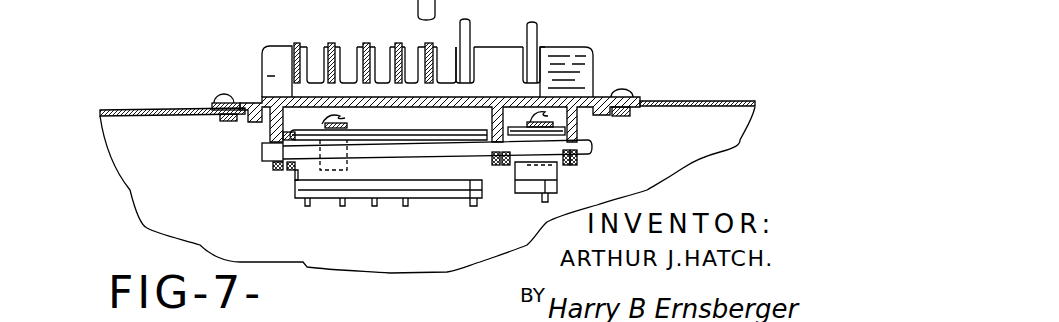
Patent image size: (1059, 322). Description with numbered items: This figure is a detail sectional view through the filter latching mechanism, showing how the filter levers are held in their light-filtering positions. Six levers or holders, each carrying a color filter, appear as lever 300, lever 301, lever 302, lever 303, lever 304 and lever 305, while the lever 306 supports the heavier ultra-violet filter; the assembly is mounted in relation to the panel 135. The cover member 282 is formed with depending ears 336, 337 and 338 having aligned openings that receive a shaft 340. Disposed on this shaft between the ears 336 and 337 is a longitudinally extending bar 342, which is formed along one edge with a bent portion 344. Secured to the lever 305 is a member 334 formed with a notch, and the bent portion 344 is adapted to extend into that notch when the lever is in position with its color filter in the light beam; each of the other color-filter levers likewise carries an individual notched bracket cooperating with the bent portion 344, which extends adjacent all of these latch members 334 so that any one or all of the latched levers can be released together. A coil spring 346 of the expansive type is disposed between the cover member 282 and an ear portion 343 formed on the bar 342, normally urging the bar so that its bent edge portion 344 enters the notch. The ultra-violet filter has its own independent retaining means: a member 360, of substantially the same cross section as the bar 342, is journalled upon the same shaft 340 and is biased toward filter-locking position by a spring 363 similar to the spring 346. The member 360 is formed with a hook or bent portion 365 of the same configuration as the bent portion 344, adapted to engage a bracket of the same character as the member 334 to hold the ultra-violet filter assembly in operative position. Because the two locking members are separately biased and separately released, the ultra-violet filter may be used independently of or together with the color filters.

The panel 135 is at (718, 100).
The cover member 282 is at (630, 93).
The lever 300 is at (290, 48).
The lever 301 is at (328, 45).
The lever 302 is at (365, 43).
The lever 303 is at (400, 32).
The lever 304 is at (430, 43).
The lever 305 is at (467, 22).
The lever 306 is at (537, 33).
The member 334 is at (470, 202).
The depending ear 336 is at (277, 172).
The depending ear 337 is at (497, 167).
The depending ear 338 is at (580, 123).
The shaft 340 is at (263, 152).
The bar 342 is at (293, 173).
The ear portion 343 is at (278, 127).
The bent portion 344 is at (388, 172).
The coil spring 346 is at (342, 120).
The member 360 is at (583, 167).
The spring 363 is at (557, 100).
The bent portion 365 is at (560, 195).